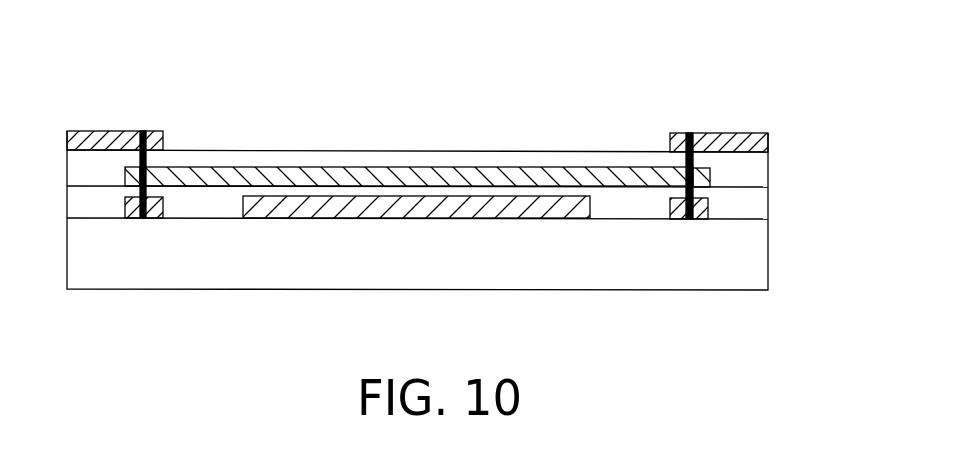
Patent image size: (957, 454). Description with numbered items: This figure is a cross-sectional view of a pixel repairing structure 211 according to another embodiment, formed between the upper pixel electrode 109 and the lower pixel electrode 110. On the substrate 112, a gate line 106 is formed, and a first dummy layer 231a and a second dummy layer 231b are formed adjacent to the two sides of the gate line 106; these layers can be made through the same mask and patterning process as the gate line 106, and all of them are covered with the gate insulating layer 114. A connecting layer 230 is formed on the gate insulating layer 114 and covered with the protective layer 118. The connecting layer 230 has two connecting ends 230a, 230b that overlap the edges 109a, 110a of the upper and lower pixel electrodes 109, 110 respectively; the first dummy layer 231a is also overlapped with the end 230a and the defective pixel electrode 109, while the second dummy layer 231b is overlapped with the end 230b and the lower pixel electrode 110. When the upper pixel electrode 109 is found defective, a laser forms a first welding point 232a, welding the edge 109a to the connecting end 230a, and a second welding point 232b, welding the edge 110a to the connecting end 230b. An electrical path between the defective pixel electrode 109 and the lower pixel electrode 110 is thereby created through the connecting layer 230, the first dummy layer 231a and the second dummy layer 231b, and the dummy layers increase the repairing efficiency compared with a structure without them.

The pixel repairing structure 211 is at (815, 26).
The substrate 112 is at (755, 265).
The gate insulating layer 114 is at (213, 207).
The protective layer 118 is at (407, 160).
The upper pixel electrode 109 is at (100, 133).
The lower pixel electrode 110 is at (735, 134).
The edge of the upper pixel electrode 109a is at (152, 131).
The edge of the lower pixel electrode 110a is at (680, 134).
The gate line 106 is at (400, 210).
The connecting layer 230 is at (545, 177).
The first connecting end 230a is at (135, 178).
The second connecting end 230b is at (698, 182).
The first dummy layer 231a is at (157, 213).
The second dummy layer 231b is at (680, 213).
The first welding point 232a is at (146, 158).
The second welding point 232b is at (686, 162).